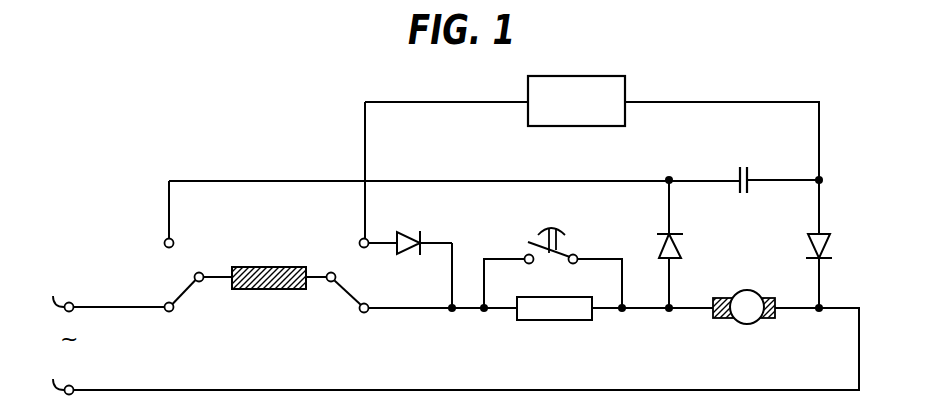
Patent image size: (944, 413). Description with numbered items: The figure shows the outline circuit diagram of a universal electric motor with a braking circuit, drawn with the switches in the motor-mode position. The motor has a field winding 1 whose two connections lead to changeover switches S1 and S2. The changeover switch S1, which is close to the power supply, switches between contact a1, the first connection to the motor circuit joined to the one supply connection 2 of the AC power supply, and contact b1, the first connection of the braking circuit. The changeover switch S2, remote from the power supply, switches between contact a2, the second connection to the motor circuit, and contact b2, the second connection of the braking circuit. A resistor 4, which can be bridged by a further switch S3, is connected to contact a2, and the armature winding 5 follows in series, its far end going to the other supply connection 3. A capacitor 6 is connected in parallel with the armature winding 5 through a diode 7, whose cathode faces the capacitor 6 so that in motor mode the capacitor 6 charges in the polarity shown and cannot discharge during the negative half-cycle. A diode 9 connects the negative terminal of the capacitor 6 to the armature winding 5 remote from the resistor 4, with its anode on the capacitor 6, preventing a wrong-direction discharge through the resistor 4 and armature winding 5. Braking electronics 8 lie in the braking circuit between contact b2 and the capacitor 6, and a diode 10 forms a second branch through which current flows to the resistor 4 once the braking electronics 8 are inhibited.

The field winding 1 is at (260, 266).
The connection of the supply voltage 2 is at (58, 288).
The other connection of the supply voltage 3 is at (58, 372).
The resistor 4 is at (548, 322).
The armature winding 5 is at (738, 328).
The capacitor 6 is at (754, 145).
The diode 7 is at (680, 246).
The braking electronics 8 is at (558, 128).
The diode 9 is at (830, 250).
The diode 10 is at (405, 232).
The changeover switch S1 is at (203, 296).
The changeover switch S2 is at (333, 298).
The further switch S3 is at (535, 245).
The contact a1 is at (151, 327).
The contact a2 is at (364, 328).
The contact b1 is at (150, 244).
The contact b2 is at (346, 244).